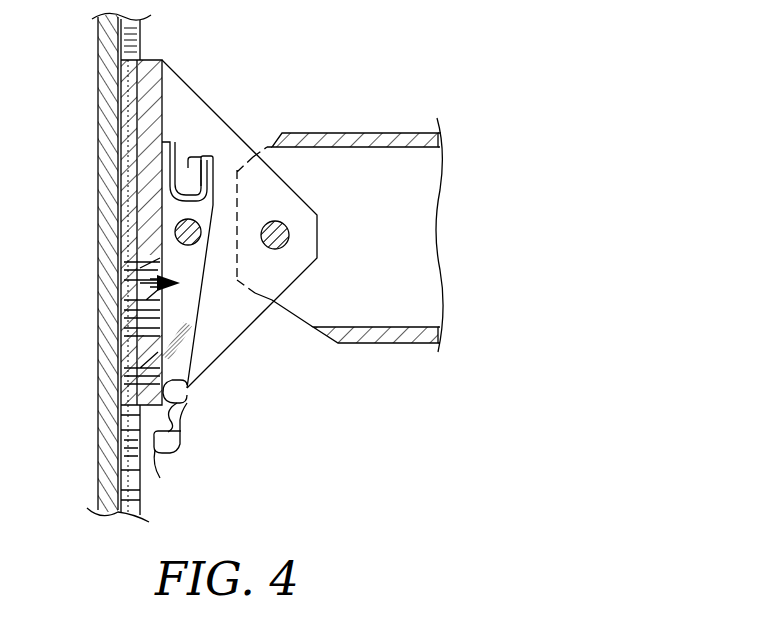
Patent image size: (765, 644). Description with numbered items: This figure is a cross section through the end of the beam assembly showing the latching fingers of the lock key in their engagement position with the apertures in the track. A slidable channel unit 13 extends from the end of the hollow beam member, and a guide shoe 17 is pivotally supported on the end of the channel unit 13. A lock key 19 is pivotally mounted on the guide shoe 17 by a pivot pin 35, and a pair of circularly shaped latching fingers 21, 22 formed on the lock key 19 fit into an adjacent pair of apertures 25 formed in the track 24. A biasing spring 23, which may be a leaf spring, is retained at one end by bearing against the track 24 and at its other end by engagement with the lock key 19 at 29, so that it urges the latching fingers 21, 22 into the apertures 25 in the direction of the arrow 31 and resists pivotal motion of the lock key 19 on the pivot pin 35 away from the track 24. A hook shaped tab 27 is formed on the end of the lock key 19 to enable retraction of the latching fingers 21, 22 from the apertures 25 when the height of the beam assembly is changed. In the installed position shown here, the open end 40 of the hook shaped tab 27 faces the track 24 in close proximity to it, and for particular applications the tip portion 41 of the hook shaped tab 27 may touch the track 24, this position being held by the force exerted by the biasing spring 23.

The slidable channel unit 13 is at (340, 131).
The guide shoe 17 is at (194, 92).
The lock key 19 is at (185, 301).
The latching finger 21 is at (104, 318).
The latching finger 22 is at (105, 376).
The biasing spring 23 is at (170, 158).
The track 24 is at (101, 126).
The aperture 25 is at (106, 277).
The hook shaped tab 27 is at (190, 391).
The spring engagement location 29 is at (198, 157).
The arrow 31 is at (190, 493).
The pivot pin 35 is at (197, 224).
The open end 40 is at (180, 432).
The tip portion 41 is at (160, 479).